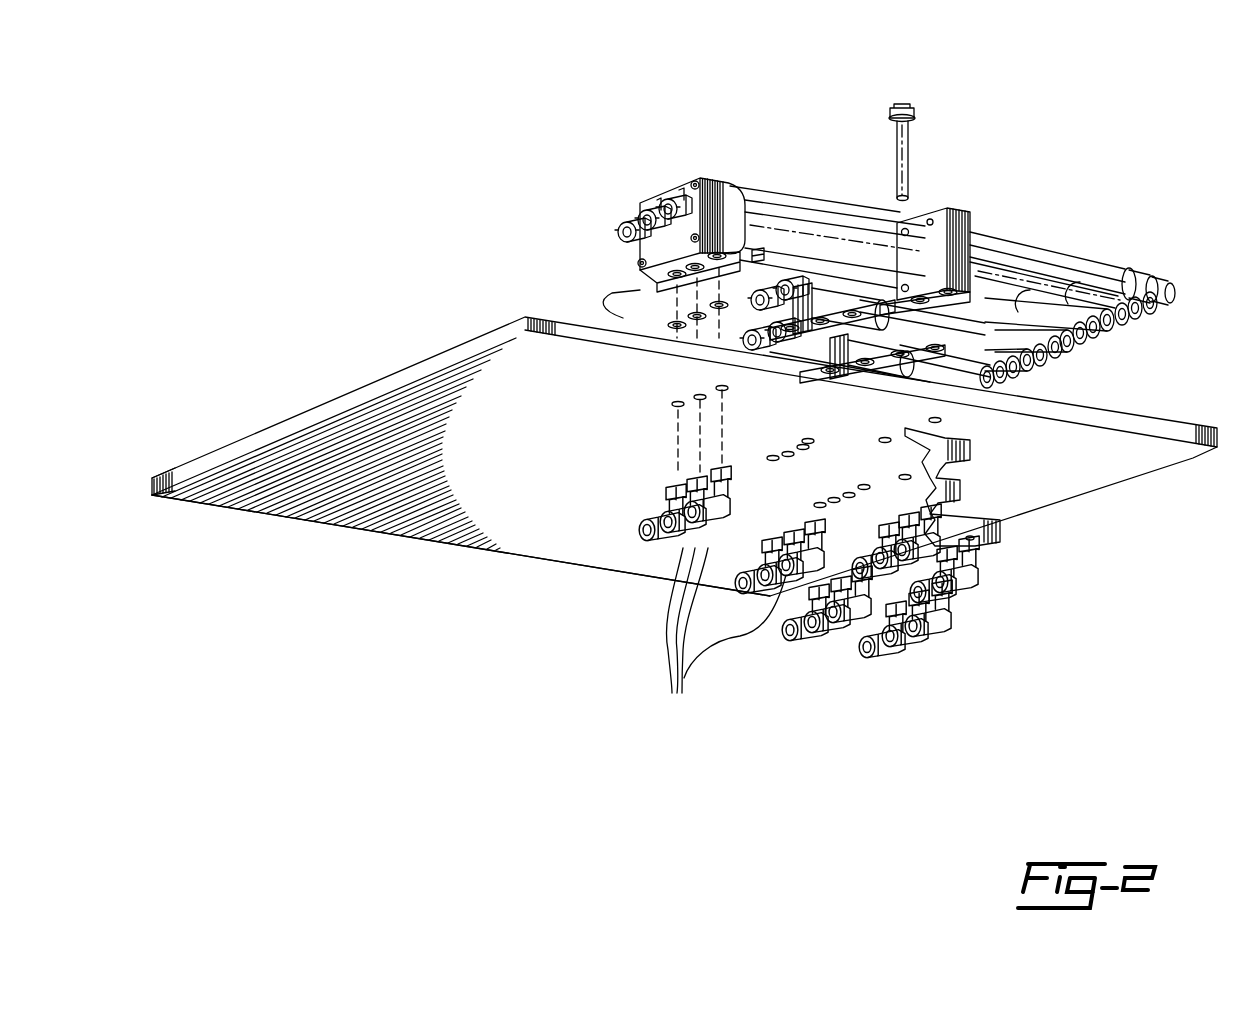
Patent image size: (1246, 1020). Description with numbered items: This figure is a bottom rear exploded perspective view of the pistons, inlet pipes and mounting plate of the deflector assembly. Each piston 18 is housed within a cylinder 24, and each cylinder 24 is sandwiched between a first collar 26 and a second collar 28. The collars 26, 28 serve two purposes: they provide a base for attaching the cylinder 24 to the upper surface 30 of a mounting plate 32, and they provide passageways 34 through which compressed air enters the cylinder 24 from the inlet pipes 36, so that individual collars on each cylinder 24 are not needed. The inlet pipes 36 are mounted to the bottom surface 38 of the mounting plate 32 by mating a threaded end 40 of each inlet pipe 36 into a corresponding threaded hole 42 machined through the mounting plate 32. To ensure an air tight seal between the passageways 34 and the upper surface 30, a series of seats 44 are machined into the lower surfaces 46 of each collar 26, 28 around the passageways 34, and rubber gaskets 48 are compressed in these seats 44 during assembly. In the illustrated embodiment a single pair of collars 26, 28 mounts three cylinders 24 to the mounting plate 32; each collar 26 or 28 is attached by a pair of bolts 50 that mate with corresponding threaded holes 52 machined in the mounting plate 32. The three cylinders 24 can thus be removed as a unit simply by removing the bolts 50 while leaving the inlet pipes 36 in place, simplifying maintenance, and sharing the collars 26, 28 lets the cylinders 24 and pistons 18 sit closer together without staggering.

The piston 18 is at (1037, 270).
The cylinder 24 is at (818, 228).
The first collar 26 is at (727, 177).
The second collar 28 is at (947, 210).
The upper surface 30 is at (452, 342).
The mounting plate 32 is at (338, 407).
The passageway 34 is at (632, 287).
The inlet pipe 36 is at (723, 639).
The bottom surface 38 is at (225, 490).
The threaded end 40 is at (657, 513).
The threaded hole 42 is at (720, 388).
The seat 44 is at (693, 184).
The lower surface 46 is at (757, 260).
The rubber gasket 48 is at (668, 322).
The bolt 50 is at (907, 109).
The threaded hole 52 is at (925, 417).